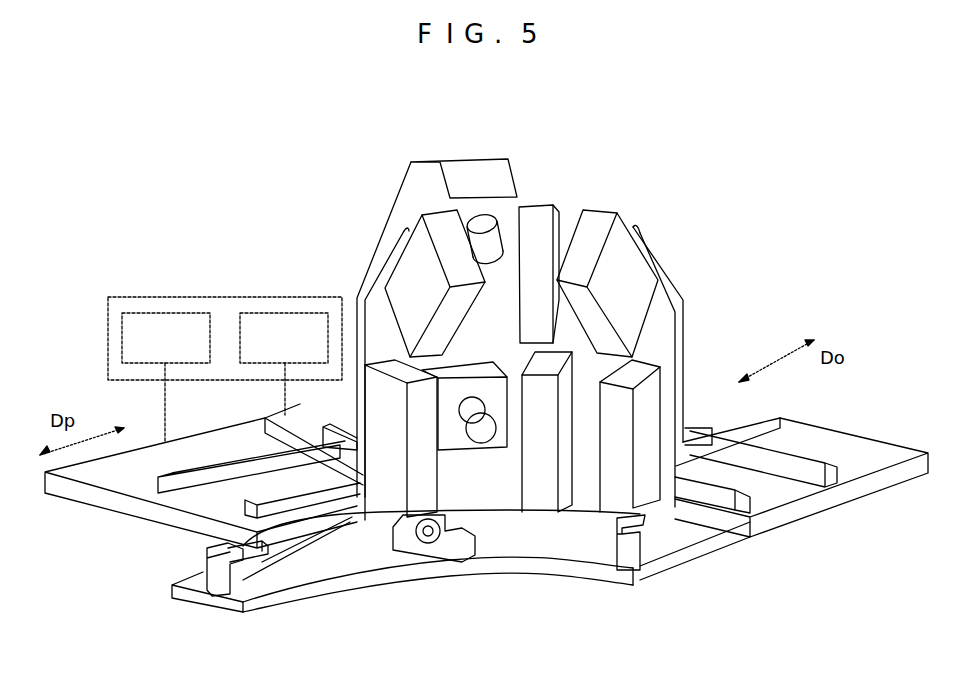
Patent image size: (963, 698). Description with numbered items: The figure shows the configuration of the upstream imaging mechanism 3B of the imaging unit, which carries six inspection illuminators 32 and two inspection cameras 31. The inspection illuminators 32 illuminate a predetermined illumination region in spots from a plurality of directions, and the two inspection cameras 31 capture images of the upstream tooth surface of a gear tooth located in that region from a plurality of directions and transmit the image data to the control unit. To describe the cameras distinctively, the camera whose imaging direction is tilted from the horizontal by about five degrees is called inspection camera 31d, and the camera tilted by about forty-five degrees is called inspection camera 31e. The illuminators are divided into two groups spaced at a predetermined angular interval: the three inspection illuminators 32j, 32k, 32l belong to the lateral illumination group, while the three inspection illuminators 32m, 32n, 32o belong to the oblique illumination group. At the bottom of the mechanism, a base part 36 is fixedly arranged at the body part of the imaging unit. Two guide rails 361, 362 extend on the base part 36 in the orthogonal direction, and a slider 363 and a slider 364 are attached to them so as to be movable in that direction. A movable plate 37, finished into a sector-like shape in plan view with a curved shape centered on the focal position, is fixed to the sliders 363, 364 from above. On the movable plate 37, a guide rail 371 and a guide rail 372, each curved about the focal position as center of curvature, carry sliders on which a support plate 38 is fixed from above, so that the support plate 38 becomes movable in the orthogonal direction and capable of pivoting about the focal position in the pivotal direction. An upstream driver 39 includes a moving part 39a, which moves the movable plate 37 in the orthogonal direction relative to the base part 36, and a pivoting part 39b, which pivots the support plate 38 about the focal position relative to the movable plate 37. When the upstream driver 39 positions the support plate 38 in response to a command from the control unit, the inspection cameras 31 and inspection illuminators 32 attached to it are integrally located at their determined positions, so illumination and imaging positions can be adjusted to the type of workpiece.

The upstream imaging mechanism 3B is at (721, 153).
The inspection camera 31 is at (490, 297).
The inspection camera 31e is at (487, 218).
The inspection camera 31d is at (482, 444).
The inspection illuminator 32 is at (520, 389).
The inspection illuminator 32o is at (399, 276).
The inspection illuminator 32n is at (540, 201).
The inspection illuminator 32m is at (637, 277).
The inspection illuminator 32l is at (383, 481).
The inspection illuminator 32k is at (540, 497).
The inspection illuminator 32j is at (657, 405).
The base part 36 is at (500, 552).
The guide rail 361 is at (233, 568).
The guide rail 362 is at (643, 521).
The slider 363 is at (273, 549).
The slider 364 is at (660, 520).
The movable plate 37 is at (130, 507).
The guide rail 371 is at (754, 512).
The guide rail 372 is at (831, 484).
The support plate 38 is at (747, 421).
The upstream driver 39 is at (226, 297).
The moving part 39a is at (145, 312).
The pivoting part 39b is at (306, 312).